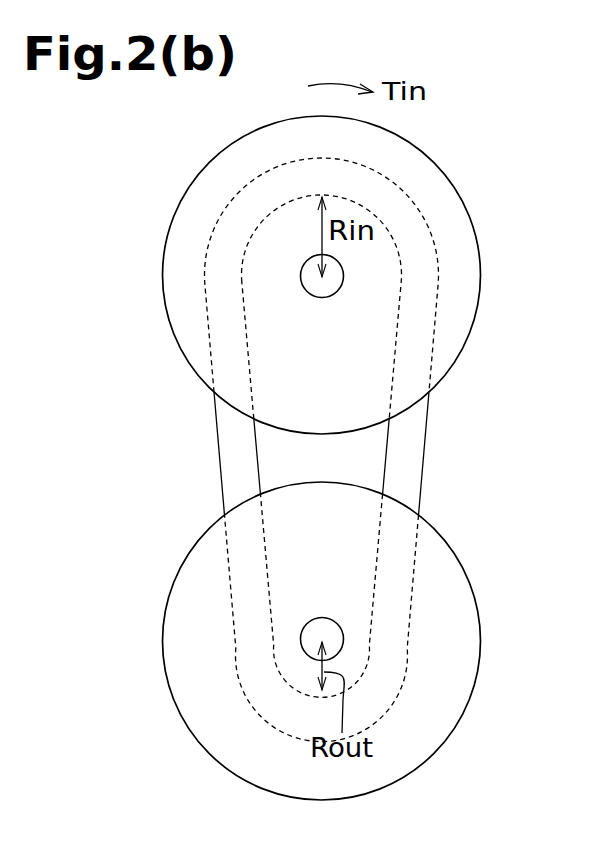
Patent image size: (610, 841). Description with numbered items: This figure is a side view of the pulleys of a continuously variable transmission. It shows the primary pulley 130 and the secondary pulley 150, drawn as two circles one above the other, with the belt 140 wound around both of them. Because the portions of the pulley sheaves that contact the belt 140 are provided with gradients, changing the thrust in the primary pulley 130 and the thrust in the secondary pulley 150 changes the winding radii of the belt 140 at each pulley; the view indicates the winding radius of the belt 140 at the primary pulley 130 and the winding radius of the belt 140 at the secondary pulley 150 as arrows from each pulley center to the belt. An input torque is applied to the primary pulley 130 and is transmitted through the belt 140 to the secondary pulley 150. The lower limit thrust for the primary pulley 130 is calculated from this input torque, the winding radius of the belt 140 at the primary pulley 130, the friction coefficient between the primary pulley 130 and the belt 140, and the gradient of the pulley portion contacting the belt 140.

The primary pulley 130 is at (475, 166).
The belt 140 is at (427, 435).
The secondary pulley 150 is at (450, 543).